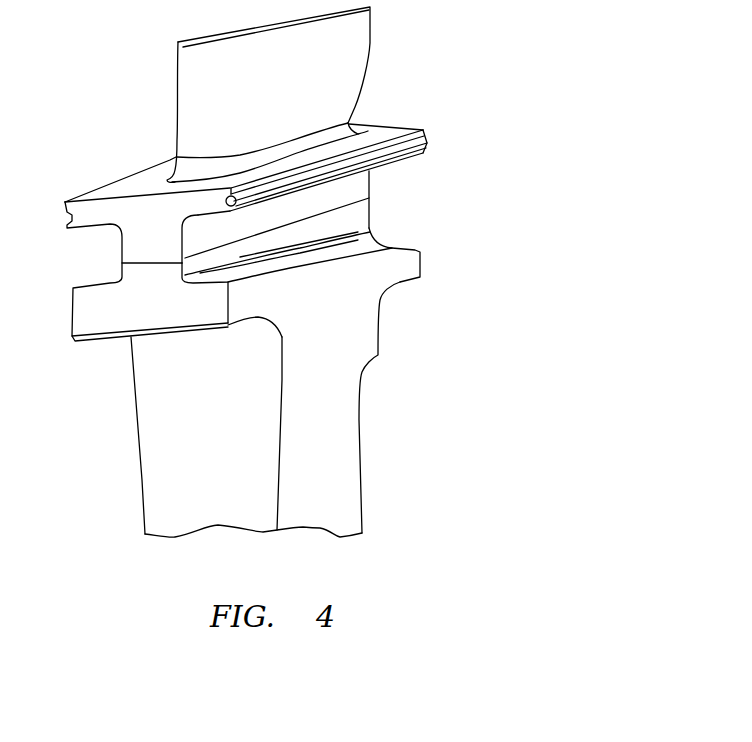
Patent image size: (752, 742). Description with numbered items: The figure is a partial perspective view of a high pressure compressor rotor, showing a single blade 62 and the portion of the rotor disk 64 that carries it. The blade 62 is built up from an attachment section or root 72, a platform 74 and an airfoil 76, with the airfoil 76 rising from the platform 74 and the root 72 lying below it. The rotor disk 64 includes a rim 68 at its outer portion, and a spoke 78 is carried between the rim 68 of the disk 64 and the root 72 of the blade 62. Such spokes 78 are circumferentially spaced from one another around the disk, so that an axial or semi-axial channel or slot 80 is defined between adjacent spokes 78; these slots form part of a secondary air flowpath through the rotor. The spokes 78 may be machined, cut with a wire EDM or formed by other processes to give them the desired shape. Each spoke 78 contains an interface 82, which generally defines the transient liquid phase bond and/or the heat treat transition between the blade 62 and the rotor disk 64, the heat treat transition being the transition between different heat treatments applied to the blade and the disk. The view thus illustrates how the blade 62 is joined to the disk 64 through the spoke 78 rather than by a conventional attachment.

The blade 62 is at (434, 52).
The rotor disk 64 is at (421, 410).
The rim 68 is at (402, 270).
The root 72 is at (357, 190).
The platform 74 is at (388, 134).
The airfoil 76 is at (348, 78).
The spoke 78 is at (404, 208).
The slot 80 is at (108, 266).
The interface 82 is at (142, 263).